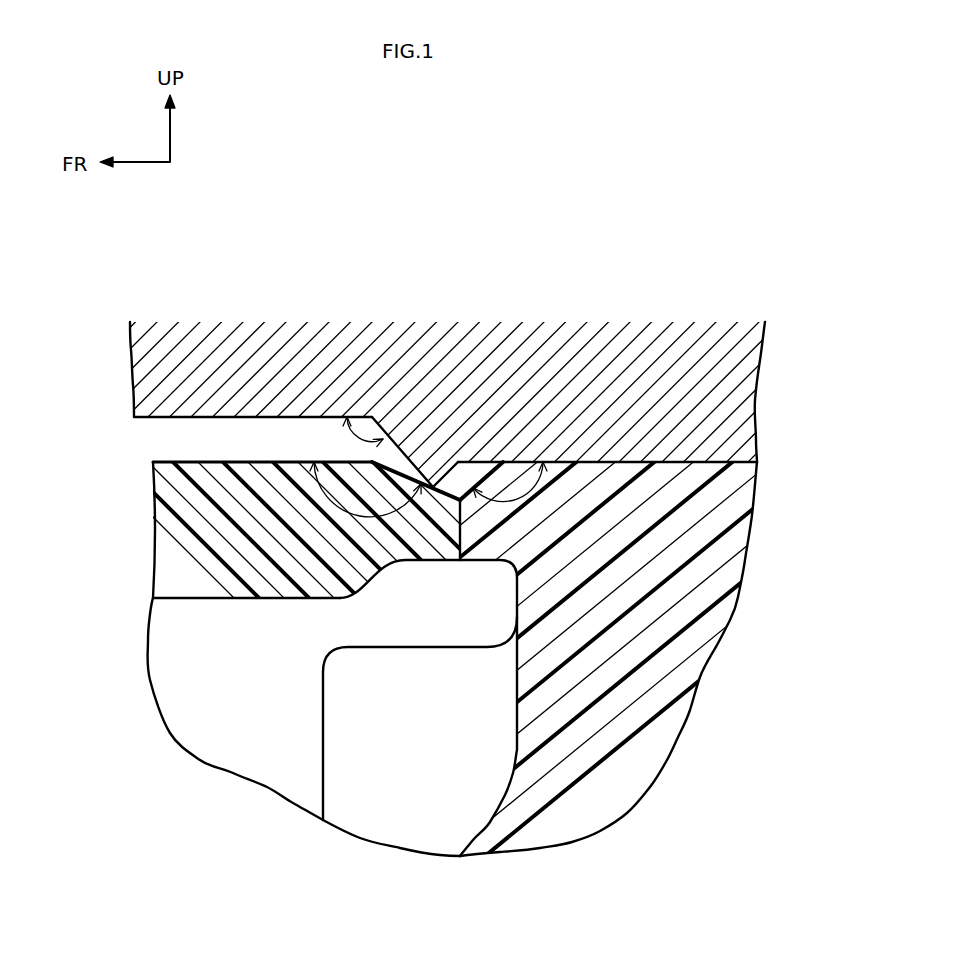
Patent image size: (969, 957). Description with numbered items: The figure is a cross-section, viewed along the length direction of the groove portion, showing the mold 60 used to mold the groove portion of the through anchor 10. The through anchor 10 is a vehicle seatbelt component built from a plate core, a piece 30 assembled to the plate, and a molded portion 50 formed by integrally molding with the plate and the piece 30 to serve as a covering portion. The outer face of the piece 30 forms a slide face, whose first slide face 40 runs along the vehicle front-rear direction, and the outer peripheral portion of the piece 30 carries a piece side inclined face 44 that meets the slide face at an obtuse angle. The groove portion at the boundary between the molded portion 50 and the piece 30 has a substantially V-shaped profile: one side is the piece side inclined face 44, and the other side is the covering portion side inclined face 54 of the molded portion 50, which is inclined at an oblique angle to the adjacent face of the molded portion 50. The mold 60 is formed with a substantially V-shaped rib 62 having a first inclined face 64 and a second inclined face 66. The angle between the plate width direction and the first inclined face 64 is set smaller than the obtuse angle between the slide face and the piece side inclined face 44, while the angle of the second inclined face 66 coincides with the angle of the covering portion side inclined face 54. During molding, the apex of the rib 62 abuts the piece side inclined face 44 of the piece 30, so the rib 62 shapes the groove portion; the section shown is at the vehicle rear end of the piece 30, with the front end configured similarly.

The through anchor 10 is at (143, 712).
The piece 30 is at (320, 527).
The first slide face 40 is at (196, 449).
The piece side inclined face 44 is at (447, 496).
The molded portion 50 is at (484, 570).
The covering portion side inclined face 54 is at (465, 478).
The mold 60 is at (466, 385).
The rib 62 is at (388, 447).
The first inclined face 64 is at (404, 455).
The second inclined face 66 is at (478, 462).